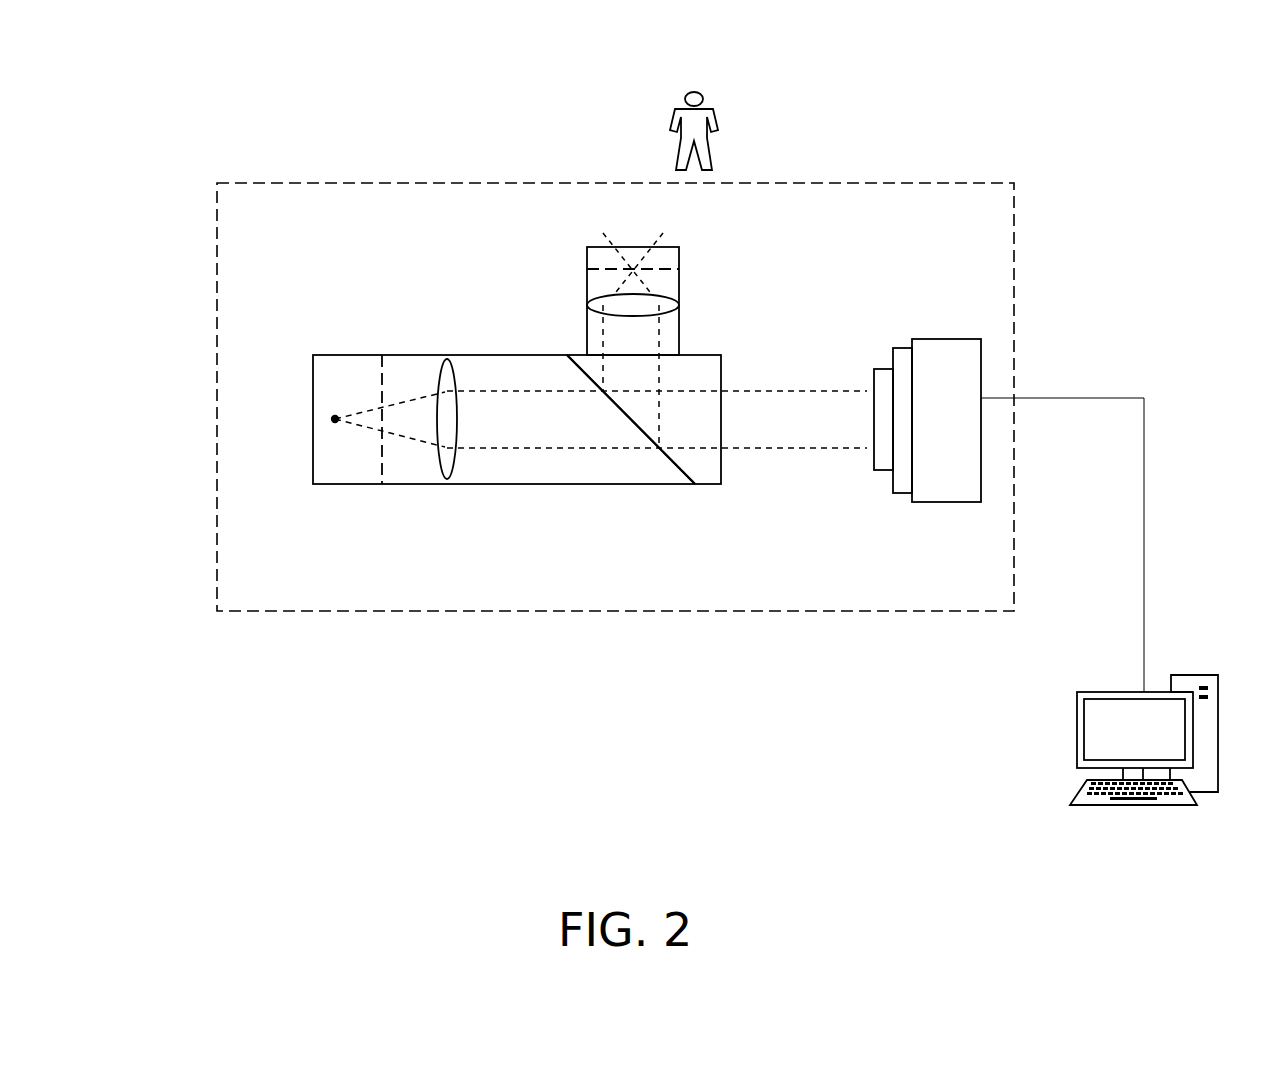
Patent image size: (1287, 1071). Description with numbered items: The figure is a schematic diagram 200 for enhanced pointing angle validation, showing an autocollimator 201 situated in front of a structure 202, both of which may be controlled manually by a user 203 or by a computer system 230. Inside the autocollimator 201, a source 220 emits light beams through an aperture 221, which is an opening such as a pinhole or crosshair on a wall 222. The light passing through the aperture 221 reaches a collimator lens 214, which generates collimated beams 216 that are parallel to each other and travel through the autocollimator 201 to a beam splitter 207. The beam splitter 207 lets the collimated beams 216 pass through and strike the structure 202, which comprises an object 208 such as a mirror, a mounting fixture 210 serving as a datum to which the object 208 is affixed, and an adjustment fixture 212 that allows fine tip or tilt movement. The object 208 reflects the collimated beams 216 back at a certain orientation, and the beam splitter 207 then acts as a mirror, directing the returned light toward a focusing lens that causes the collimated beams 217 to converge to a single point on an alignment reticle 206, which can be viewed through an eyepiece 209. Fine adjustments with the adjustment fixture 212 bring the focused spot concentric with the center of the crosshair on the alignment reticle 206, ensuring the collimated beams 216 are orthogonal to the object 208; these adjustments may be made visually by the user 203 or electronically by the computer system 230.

The schematic diagram 200 is at (122, 62).
The autocollimator 201 is at (383, 310).
The structure 202 is at (888, 263).
The user 203 is at (692, 91).
The alignment reticle 206 is at (585, 268).
The beam splitter 207 is at (673, 468).
The object 208 is at (876, 369).
The eyepiece 209 is at (593, 247).
The mounting fixture 210 is at (902, 348).
The adjustment fixture 212 is at (968, 339).
The collimator lens 214 is at (452, 362).
The collimated beams 216 is at (512, 450).
The collimated beams 217 is at (660, 337).
The source 220 is at (328, 417).
The aperture 221 is at (383, 419).
The wall 222 is at (378, 360).
The computer system 230 is at (1190, 675).